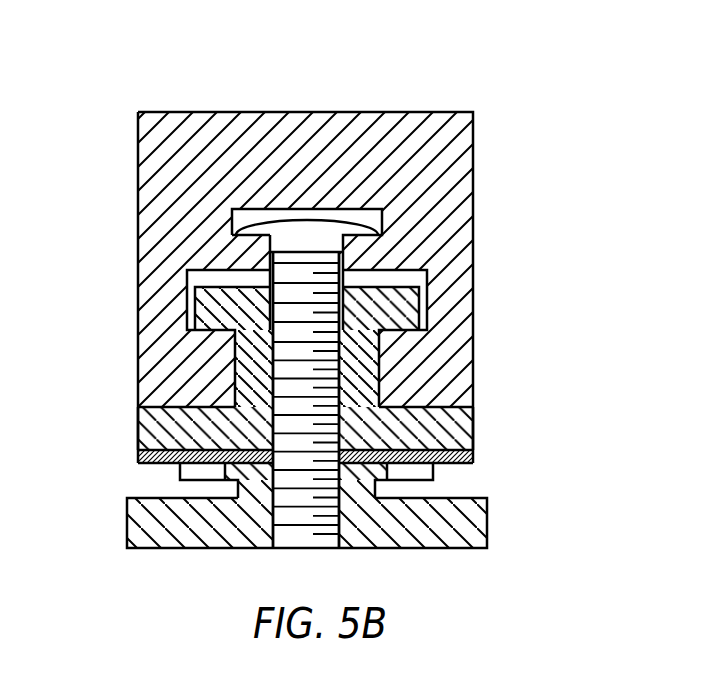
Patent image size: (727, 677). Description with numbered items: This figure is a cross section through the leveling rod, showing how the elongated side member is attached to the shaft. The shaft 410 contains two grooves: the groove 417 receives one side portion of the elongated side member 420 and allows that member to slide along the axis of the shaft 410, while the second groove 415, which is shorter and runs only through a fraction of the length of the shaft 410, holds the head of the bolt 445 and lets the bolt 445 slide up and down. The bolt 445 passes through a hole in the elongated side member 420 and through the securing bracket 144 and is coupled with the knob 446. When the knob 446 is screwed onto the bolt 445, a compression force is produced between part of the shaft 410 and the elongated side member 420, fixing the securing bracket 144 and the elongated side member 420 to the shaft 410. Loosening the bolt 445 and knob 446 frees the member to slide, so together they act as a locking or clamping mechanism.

The shaft 410 is at (390, 112).
The second groove 415 is at (232, 209).
The bolt 445 is at (346, 228).
The groove 417 is at (427, 283).
The elongated side member 420 is at (463, 430).
The securing bracket 144 is at (433, 467).
The knob 446 is at (487, 523).